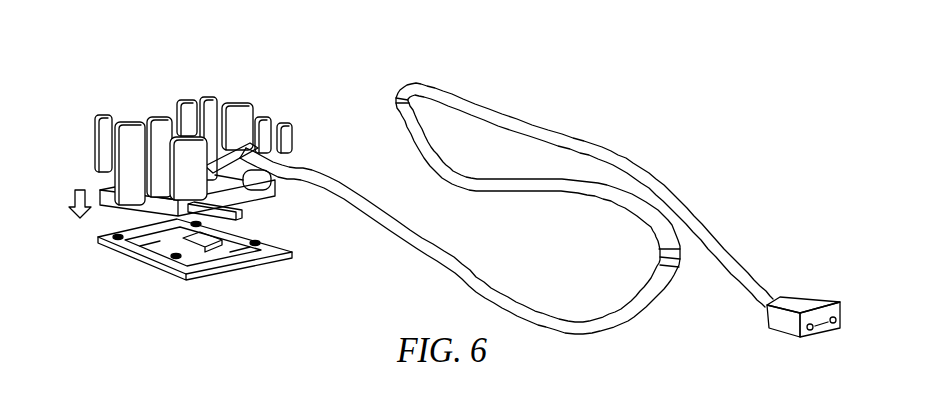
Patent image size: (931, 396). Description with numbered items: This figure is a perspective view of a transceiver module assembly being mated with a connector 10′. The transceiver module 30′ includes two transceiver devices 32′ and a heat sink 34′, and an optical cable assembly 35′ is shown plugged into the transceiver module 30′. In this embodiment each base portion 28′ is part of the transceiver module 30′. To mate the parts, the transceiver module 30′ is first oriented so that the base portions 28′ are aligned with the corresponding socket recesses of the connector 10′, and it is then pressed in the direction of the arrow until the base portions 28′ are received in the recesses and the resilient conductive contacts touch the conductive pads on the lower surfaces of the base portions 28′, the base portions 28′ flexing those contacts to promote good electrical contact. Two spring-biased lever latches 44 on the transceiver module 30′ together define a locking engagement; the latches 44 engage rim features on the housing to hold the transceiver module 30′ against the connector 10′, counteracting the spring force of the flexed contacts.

The connector 10′ is at (160, 302).
The base portion 28′ is at (235, 210).
The transceiver module 30′ is at (174, 145).
The transceiver device 32′ is at (92, 185).
The heat sink 34′ is at (125, 115).
The optical cable assembly 35′ is at (407, 243).
The spring-biased lever latch 44 is at (128, 142).